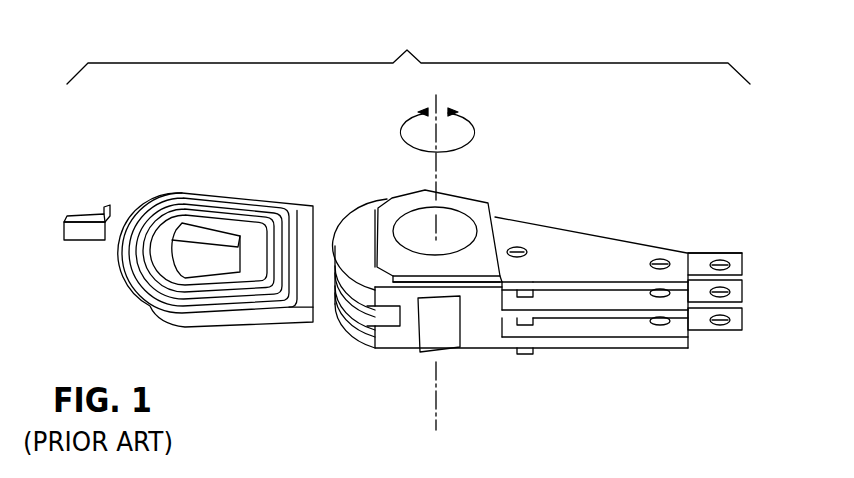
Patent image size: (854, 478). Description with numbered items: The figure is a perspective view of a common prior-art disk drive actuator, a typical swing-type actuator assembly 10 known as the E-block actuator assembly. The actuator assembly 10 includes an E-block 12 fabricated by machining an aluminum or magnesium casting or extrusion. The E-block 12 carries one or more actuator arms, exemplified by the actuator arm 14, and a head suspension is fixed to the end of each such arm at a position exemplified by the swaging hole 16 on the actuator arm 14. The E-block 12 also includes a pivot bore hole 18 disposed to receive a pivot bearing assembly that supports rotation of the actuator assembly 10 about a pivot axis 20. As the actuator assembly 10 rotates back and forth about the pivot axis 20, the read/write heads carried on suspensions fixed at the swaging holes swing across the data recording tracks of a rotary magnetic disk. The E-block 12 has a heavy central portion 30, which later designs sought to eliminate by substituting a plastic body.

The actuator assembly 10 is at (408, 53).
The E-block 12 is at (512, 193).
The actuator arm 14 is at (724, 340).
The swaging hole 16 is at (730, 318).
The pivot bore hole 18 is at (468, 241).
The pivot axis 20 is at (437, 413).
The central portion 30 is at (398, 348).